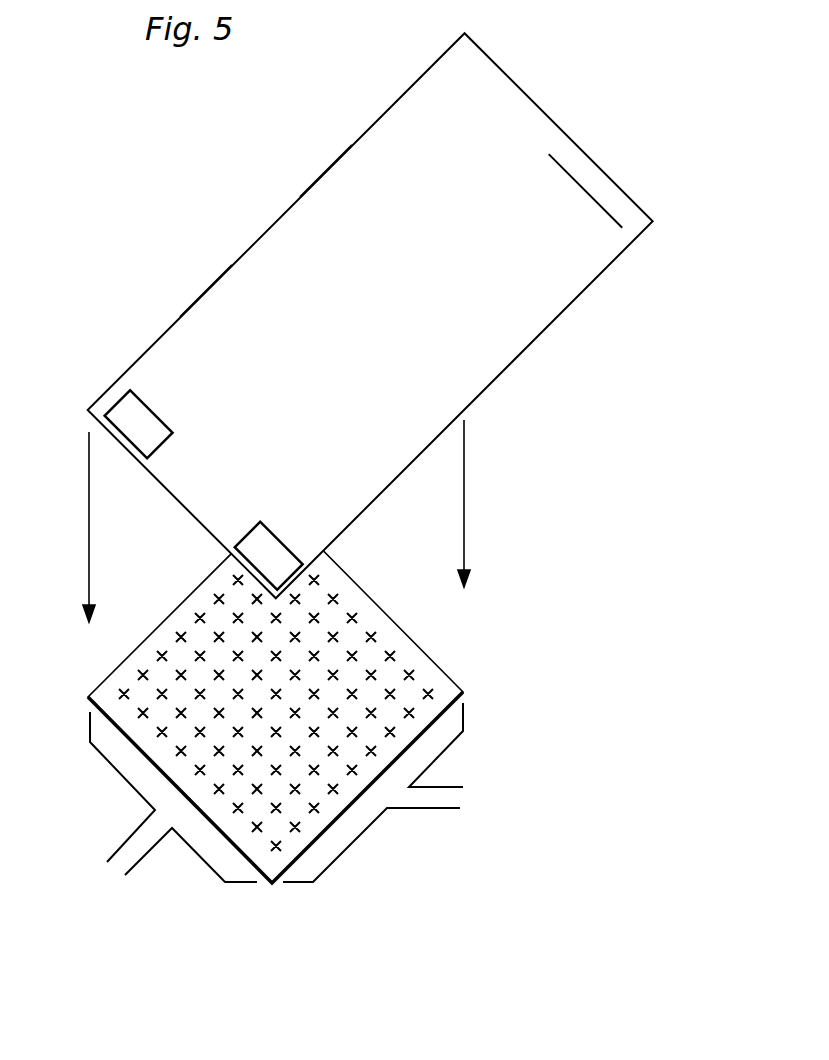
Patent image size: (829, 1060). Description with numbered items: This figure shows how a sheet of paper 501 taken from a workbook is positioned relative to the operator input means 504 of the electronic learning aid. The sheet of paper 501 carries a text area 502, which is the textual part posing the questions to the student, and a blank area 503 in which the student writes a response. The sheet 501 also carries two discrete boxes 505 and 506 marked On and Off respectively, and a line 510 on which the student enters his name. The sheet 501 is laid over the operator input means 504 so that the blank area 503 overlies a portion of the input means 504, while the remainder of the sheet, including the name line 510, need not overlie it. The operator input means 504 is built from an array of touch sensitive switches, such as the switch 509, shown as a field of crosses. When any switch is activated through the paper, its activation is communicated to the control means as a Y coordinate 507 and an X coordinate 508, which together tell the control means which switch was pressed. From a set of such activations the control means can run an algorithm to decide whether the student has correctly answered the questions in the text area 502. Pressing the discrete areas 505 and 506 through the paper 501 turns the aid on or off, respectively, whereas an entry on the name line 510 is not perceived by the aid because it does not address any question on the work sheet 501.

The sheet of paper 501 is at (450, 64).
The text area 502 is at (325, 188).
The blank area 503 is at (205, 310).
The operator input means 504 is at (452, 687).
The discrete box for On 505 is at (108, 413).
The discrete box for Off 506 is at (289, 550).
The Y coordinate 507 is at (473, 792).
The X coordinate 508 is at (148, 824).
The touch sensitive switch 509 is at (208, 602).
The name line 510 is at (588, 168).